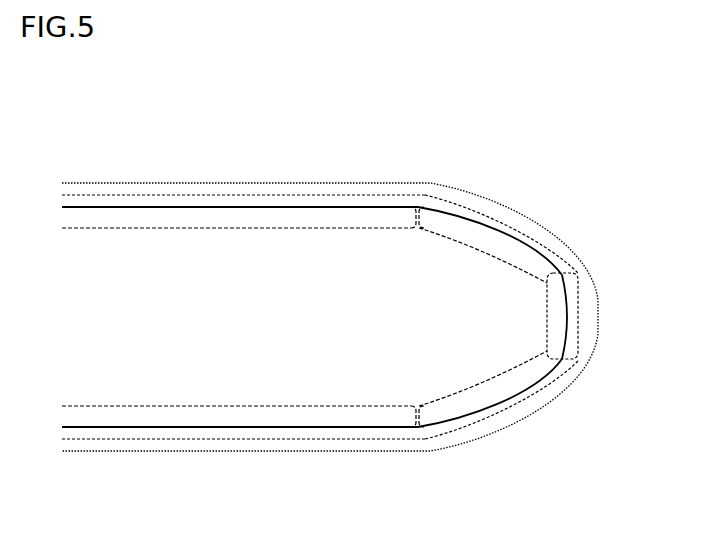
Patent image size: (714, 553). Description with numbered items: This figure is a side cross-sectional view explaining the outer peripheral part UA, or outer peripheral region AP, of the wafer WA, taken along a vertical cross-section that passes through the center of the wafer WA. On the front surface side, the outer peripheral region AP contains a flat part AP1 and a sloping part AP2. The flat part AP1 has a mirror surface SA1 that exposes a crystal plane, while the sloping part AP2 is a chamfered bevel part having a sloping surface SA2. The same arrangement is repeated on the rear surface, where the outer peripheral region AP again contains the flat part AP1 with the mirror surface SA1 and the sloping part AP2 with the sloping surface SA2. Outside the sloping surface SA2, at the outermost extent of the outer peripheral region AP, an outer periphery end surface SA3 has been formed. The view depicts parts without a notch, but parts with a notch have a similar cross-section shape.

The outer peripheral region AP is at (367, 183).
The flat part AP1 is at (285, 195).
The sloping part AP2 is at (487, 210).
The mirror surface SA1 is at (197, 206).
The sloping surface SA2 is at (513, 238).
The outer periphery end surface SA3 is at (568, 312).
The outer peripheral part UA is at (183, 427).
The wafer WA is at (443, 130).